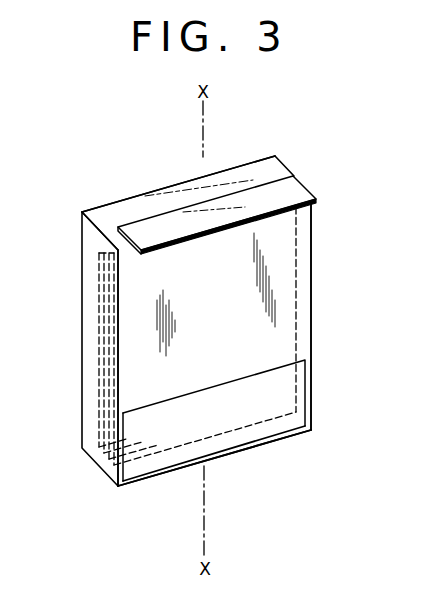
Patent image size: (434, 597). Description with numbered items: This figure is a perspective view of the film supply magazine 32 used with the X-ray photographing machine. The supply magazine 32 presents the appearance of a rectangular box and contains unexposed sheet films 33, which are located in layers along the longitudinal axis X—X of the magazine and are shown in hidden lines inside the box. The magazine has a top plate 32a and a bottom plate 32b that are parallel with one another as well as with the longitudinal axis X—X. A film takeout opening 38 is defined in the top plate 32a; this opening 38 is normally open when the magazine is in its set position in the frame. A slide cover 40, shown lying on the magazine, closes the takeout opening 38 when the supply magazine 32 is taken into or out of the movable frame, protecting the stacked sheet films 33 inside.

The film supply magazine 32 is at (320, 292).
The top plate 32a is at (283, 353).
The bottom plate 32b is at (148, 203).
The sheet films 33 is at (102, 327).
The film takeout opening 38 is at (214, 387).
The slide cover 40 is at (302, 194).